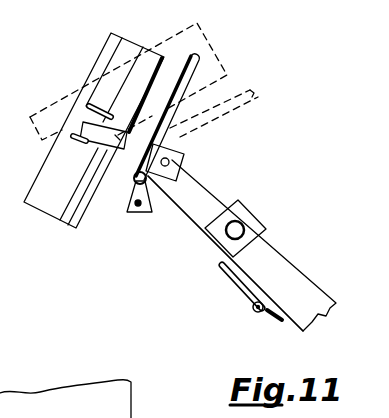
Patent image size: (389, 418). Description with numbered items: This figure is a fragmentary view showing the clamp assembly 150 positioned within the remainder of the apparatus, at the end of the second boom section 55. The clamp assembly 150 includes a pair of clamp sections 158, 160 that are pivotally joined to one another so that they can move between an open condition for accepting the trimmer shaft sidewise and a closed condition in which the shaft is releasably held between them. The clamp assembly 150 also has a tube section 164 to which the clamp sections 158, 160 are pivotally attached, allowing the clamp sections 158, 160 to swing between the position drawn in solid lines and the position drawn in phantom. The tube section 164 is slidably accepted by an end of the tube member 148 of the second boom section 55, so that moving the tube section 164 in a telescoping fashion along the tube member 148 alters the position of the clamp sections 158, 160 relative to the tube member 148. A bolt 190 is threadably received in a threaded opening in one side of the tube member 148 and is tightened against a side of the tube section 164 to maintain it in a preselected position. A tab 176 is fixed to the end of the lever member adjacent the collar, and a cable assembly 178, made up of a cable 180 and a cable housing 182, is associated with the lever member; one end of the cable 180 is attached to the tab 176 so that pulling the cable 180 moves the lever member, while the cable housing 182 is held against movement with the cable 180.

The second boom section 55 is at (298, 273).
The tube member 148 is at (253, 205).
The clamp assembly 150 is at (244, 65).
The clamp section 158 is at (62, 230).
The clamp section 160 is at (161, 43).
The tube section 164 is at (202, 177).
The tab 176 is at (129, 216).
The cable assembly 178 is at (270, 317).
The cable 180 is at (180, 238).
The cable housing 182 is at (235, 278).
The bolt 190 is at (250, 228).